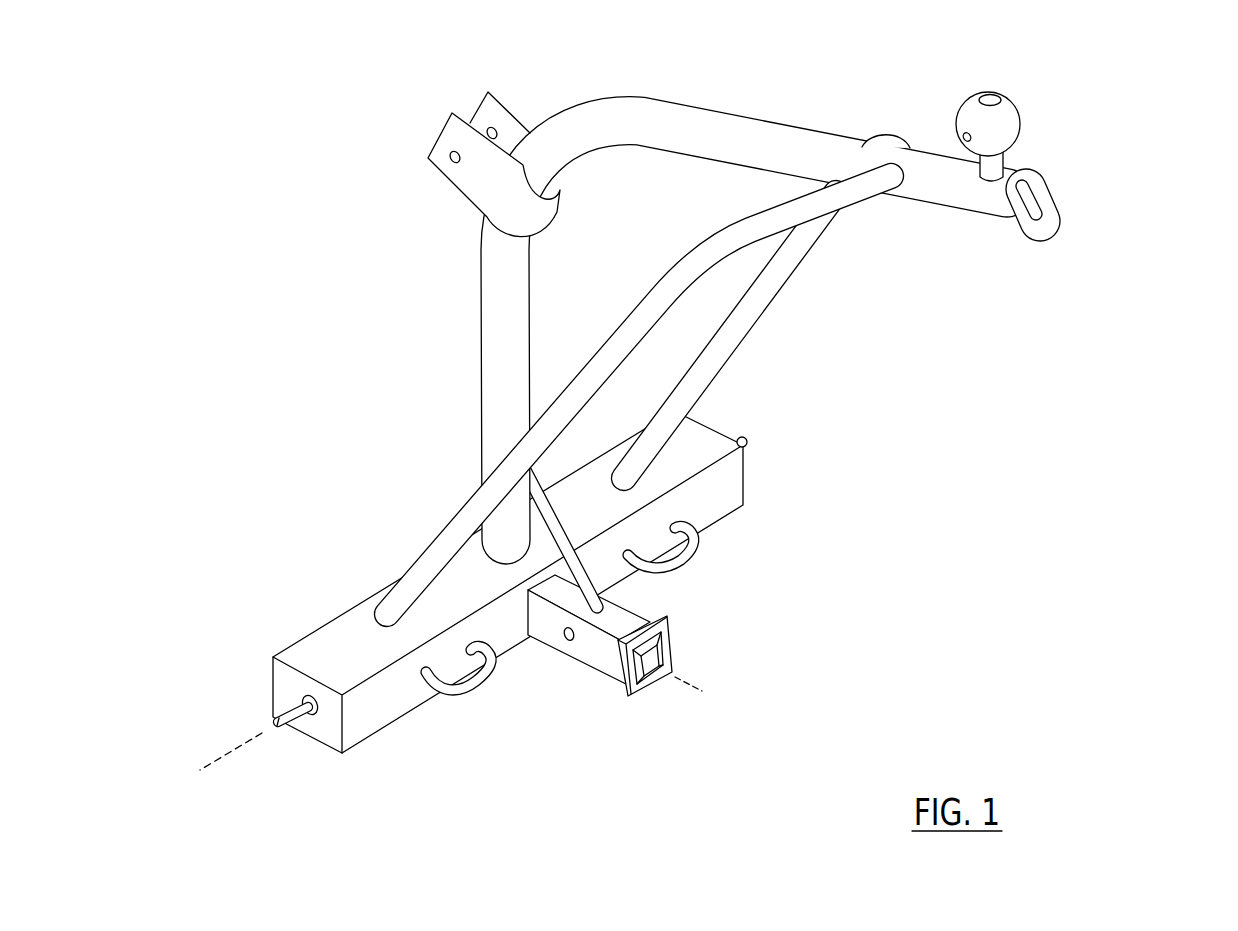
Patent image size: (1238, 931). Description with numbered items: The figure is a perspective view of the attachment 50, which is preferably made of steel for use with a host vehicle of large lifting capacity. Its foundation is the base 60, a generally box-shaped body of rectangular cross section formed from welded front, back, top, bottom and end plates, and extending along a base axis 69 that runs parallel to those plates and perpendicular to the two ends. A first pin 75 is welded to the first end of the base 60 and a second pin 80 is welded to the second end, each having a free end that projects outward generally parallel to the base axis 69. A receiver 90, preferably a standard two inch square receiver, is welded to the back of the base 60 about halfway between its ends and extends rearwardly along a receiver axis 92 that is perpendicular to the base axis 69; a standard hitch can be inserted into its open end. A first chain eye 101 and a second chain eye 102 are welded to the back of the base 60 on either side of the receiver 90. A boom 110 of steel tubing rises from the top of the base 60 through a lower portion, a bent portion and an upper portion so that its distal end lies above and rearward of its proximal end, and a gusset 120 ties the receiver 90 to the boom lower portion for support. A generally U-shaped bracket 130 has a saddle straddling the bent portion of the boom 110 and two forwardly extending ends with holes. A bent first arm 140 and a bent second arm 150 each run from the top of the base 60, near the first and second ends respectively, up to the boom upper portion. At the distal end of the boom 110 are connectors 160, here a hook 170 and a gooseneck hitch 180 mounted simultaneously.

The attachment 50 is at (673, 410).
The base 60 is at (312, 617).
The base axis 69 is at (212, 762).
The first pin 75 is at (300, 742).
The second pin 80 is at (753, 430).
The receiver 90 is at (660, 608).
The receiver axis 92 is at (700, 689).
The first chain eye 101 is at (463, 700).
The second chain eye 102 is at (695, 543).
The boom 110 is at (773, 112).
The gusset 120 is at (553, 590).
The U-shaped bracket 130 is at (520, 98).
The first arm 140 is at (594, 335).
The second arm 150 is at (794, 292).
The connectors 160 is at (1033, 113).
The hook 170 is at (1070, 204).
The gooseneck hitch 180 is at (1012, 84).